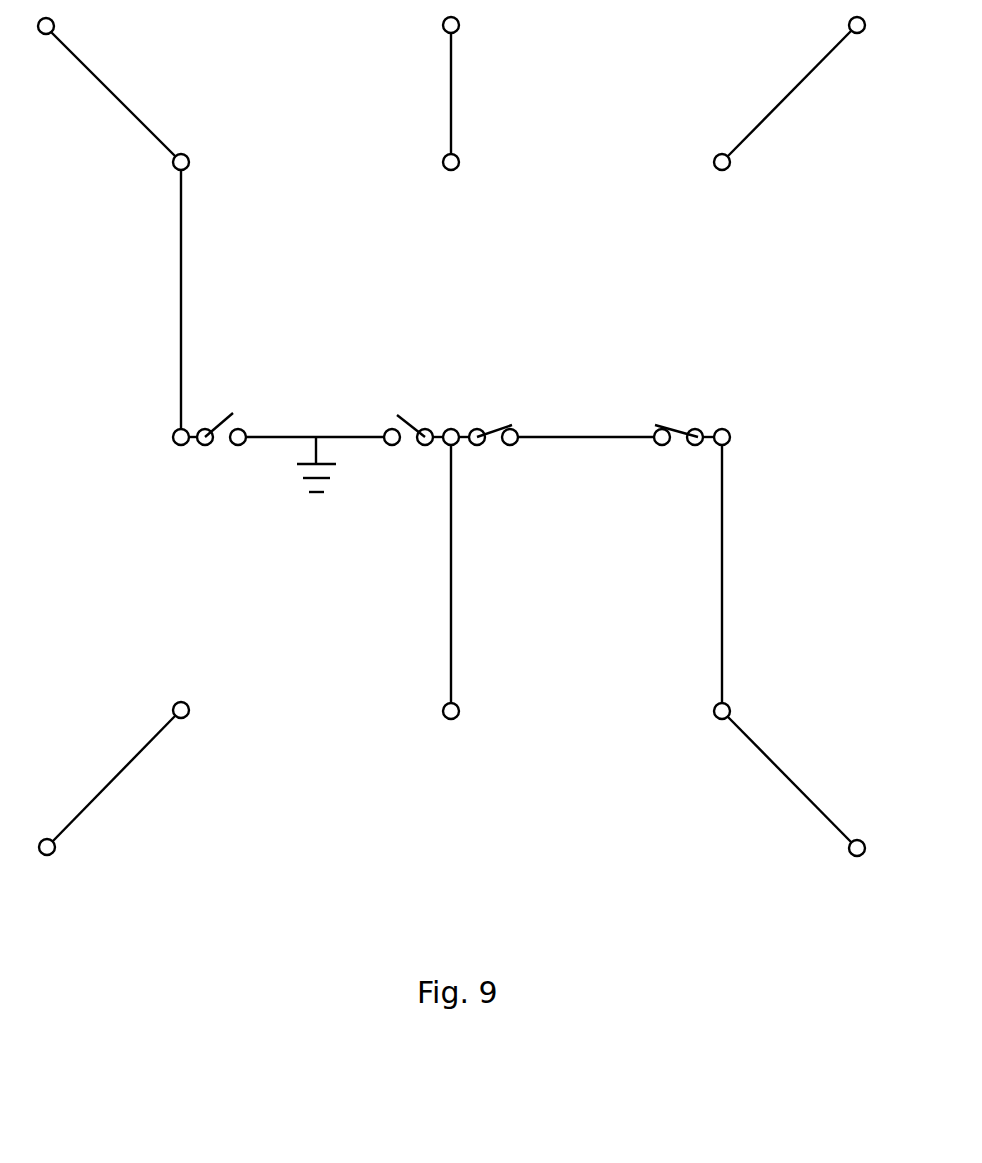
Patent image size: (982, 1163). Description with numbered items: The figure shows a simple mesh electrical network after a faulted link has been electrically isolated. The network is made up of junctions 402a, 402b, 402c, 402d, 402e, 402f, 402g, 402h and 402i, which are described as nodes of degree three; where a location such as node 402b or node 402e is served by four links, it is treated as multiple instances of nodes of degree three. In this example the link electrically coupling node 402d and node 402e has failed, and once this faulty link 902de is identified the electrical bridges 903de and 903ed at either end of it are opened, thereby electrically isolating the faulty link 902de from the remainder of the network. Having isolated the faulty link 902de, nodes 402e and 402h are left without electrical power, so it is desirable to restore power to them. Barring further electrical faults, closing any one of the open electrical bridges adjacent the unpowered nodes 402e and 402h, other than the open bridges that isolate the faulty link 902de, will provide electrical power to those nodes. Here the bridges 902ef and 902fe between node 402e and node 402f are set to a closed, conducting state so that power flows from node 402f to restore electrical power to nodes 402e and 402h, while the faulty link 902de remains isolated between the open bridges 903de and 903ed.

The junction 402a is at (189, 158).
The junction 402b is at (459, 160).
The junction 402c is at (730, 162).
The junction 402d is at (174, 445).
The junction 402e is at (448, 428).
The junction 402f is at (730, 431).
The junction 402g is at (189, 706).
The junction 402h is at (459, 707).
The junction 402i is at (730, 707).
The faulty link 902de is at (290, 437).
The electrical bridge 902ef is at (530, 457).
The electrical bridge 902fe is at (713, 457).
The electrical bridge 903de is at (257, 457).
The electrical bridge 903ed is at (443, 457).